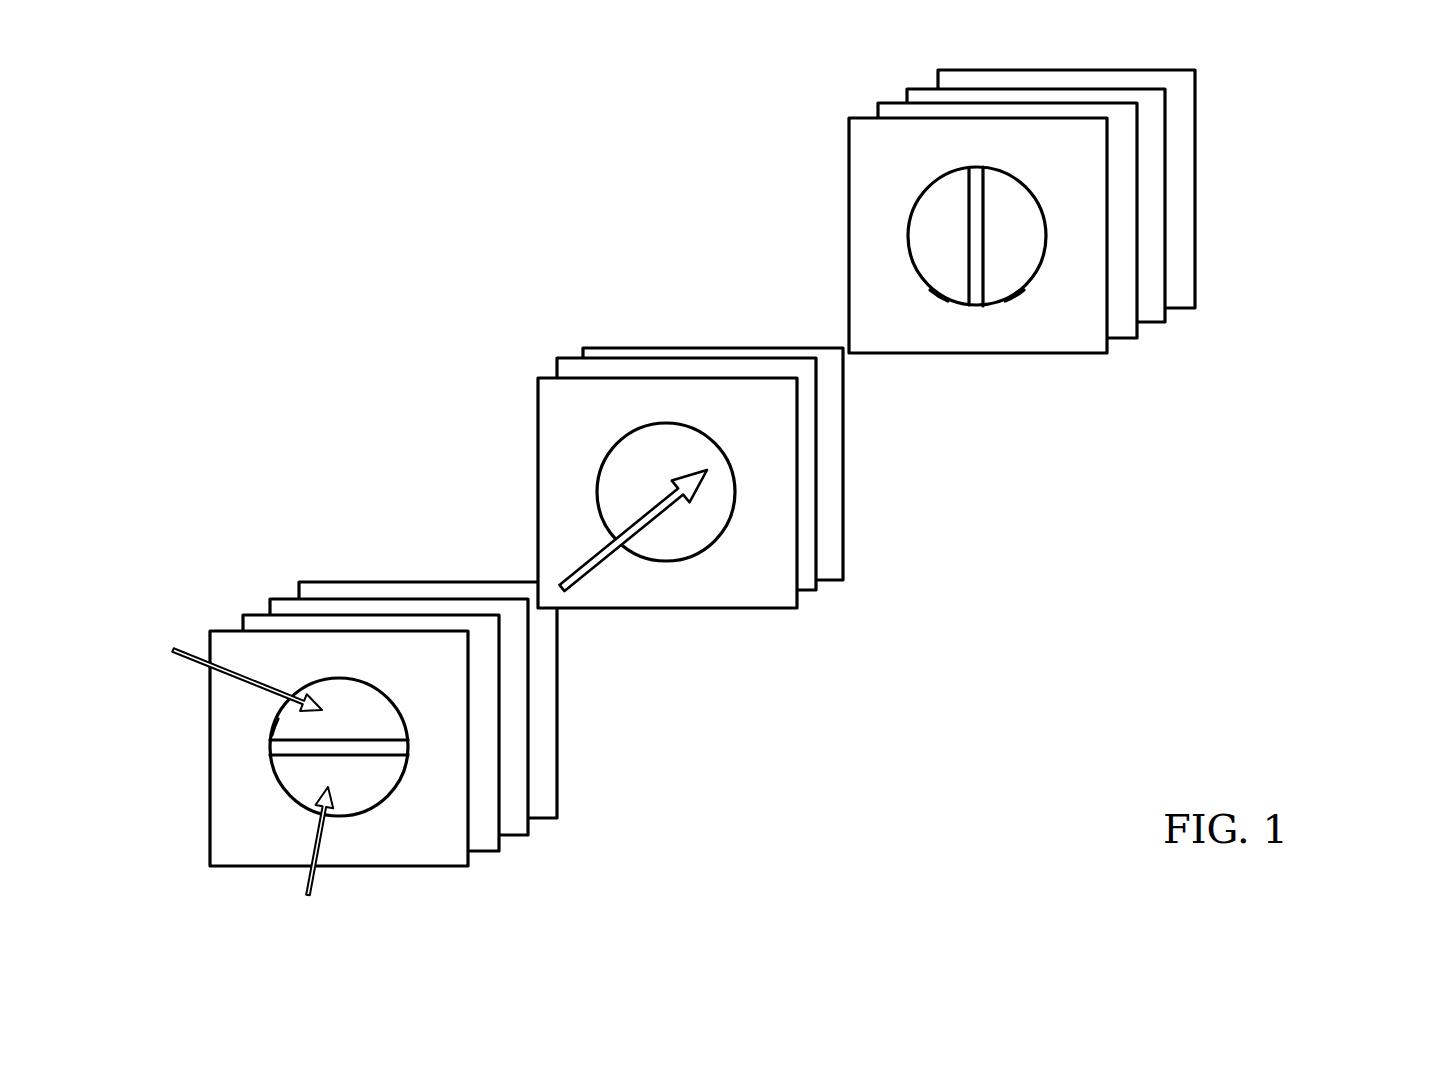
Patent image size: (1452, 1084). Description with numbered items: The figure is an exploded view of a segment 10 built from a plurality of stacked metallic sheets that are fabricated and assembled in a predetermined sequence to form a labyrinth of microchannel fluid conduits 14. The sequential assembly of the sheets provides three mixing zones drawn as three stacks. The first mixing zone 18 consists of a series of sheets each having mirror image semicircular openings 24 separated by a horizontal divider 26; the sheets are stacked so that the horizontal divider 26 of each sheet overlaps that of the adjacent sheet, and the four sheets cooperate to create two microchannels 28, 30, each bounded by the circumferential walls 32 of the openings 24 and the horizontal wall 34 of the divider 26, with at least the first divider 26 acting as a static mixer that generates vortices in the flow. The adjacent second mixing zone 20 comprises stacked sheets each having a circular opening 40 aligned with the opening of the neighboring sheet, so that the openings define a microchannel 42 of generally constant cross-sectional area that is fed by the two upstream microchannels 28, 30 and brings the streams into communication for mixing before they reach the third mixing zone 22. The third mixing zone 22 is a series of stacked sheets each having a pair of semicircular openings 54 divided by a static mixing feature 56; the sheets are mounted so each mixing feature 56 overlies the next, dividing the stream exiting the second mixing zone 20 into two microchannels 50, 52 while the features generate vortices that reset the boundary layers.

The segment 10 is at (379, 235).
The microchannel fluid conduits 14 is at (231, 786).
The first mixing zone 18 is at (539, 755).
The second mixing zone 20 is at (802, 519).
The third mixing zone 22 is at (1092, 255).
The semicircular openings 24 is at (278, 719).
The horizontal divider 26 is at (278, 757).
The microchannel 28 is at (367, 790).
The microchannel 30 is at (342, 685).
The circumferential walls 32 is at (397, 700).
The horizontal wall 34 is at (397, 737).
The circular opening 40 is at (682, 528).
The microchannel 42 is at (608, 477).
The microchannel 50 is at (937, 297).
The microchannel 52 is at (1010, 298).
The semicircular openings 54 is at (925, 227).
The static mixing feature 56 is at (978, 288).